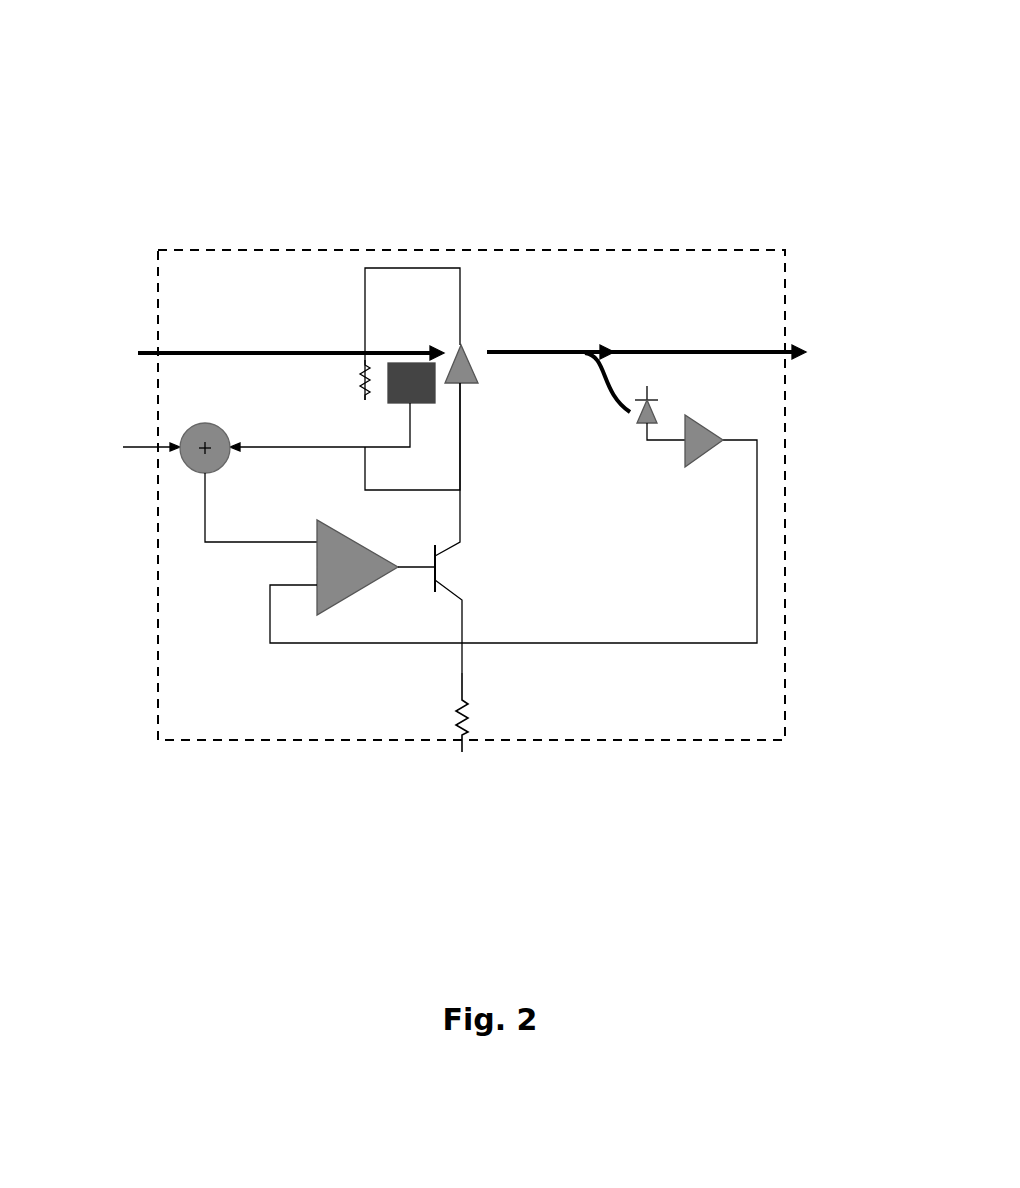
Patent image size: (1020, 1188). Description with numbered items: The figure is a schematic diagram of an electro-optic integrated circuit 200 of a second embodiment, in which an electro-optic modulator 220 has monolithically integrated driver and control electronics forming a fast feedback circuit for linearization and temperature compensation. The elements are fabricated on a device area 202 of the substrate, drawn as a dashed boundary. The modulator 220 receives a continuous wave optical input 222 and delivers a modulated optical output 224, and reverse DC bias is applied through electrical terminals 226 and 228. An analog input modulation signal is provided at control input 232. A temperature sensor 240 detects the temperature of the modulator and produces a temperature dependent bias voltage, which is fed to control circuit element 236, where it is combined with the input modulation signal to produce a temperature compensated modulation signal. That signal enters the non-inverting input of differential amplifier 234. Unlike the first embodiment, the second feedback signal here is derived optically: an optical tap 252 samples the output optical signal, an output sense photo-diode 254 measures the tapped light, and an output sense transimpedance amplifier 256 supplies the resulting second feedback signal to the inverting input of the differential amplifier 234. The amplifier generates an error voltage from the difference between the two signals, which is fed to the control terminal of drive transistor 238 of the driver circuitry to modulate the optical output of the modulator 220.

The electro-optic integrated circuit 200 is at (104, 59).
The device area 202 is at (247, 248).
The electro-optic modulator 220 is at (470, 343).
The optical input 222 is at (226, 358).
The optical output 224 is at (702, 354).
The electrical terminal 226 is at (413, 268).
The electrical terminal 228 is at (452, 729).
The control input 232 is at (97, 459).
The differential amplifier 234 is at (481, 541).
The control circuit element 236 is at (231, 458).
The drive transistor 238 is at (484, 528).
The temperature sensor 240 is at (440, 347).
The optical tap 252 is at (605, 402).
The output sense photo-diode 254 is at (647, 452).
The output sense transimpedance amplifier 256 is at (713, 443).